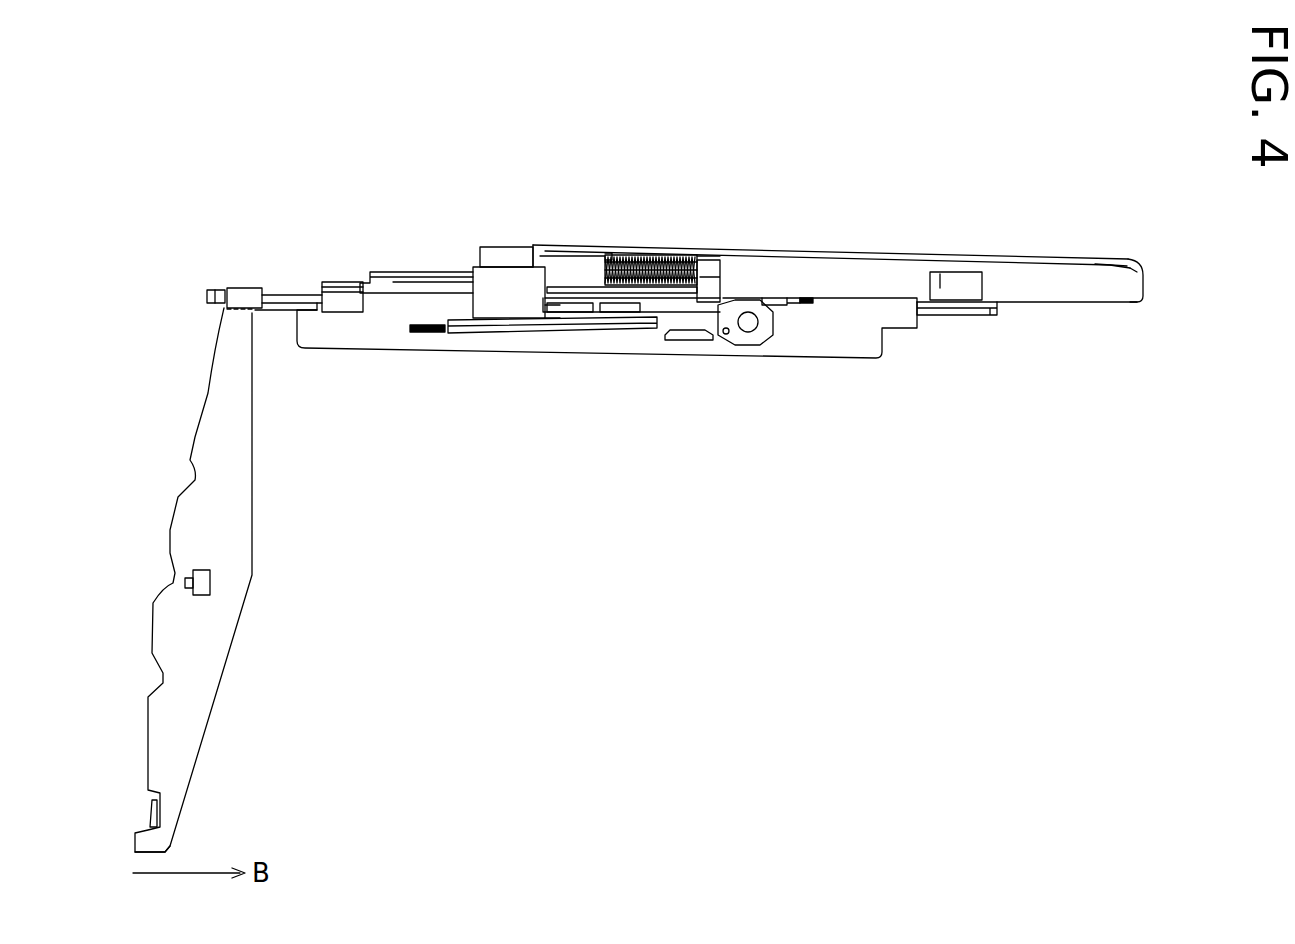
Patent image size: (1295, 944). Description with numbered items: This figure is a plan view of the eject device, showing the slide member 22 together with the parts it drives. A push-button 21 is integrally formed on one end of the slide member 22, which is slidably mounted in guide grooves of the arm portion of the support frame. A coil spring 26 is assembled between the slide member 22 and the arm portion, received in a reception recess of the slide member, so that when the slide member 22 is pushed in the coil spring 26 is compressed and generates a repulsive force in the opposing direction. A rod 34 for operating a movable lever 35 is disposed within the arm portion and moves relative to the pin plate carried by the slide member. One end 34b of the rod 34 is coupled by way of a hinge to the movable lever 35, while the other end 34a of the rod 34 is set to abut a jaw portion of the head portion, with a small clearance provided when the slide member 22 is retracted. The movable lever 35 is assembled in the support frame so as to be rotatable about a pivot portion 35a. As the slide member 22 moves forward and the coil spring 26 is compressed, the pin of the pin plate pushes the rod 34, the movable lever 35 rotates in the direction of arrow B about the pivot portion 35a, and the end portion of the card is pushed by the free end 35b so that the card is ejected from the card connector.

The push-button 21 is at (1143, 277).
The slide member 22 is at (895, 258).
The coil spring 26 is at (655, 257).
The rod 34 is at (550, 293).
The other end of rod 34a is at (660, 323).
The one end of rod 34b is at (282, 288).
The movable lever 35 is at (235, 522).
The pivot portion 35a is at (210, 582).
The free end 35b is at (172, 842).